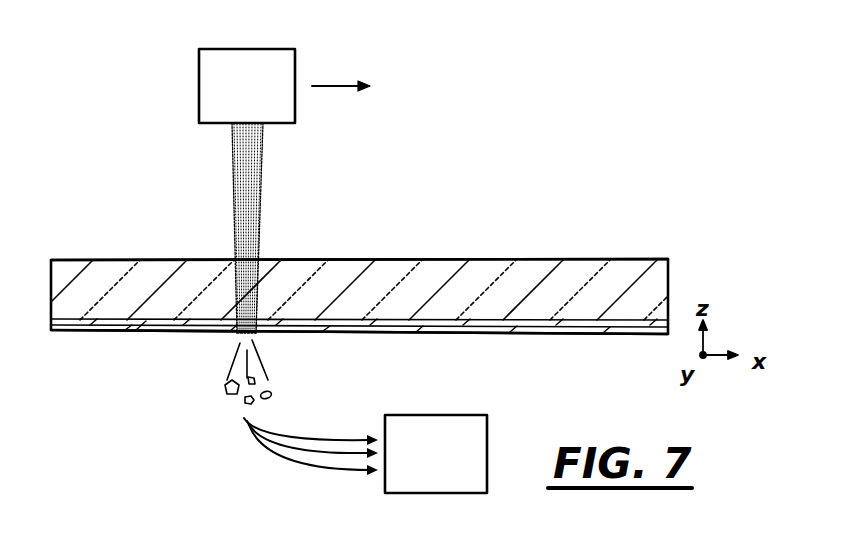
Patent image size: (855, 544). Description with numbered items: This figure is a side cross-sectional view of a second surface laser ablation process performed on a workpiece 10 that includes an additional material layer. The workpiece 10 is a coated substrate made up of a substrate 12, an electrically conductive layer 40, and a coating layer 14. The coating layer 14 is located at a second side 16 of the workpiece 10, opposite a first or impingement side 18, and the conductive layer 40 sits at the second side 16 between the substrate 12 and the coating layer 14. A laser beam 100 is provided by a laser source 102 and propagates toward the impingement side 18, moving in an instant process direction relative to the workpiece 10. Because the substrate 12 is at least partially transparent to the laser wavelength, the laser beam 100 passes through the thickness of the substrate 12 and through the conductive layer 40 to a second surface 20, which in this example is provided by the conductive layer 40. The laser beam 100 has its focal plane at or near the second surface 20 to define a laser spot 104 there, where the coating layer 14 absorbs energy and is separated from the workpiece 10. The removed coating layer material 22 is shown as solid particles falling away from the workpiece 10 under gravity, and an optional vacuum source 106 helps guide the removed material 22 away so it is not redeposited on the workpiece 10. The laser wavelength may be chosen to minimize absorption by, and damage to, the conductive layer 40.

The workpiece 10 is at (80, 246).
The substrate 12 is at (519, 268).
The coating layer 14 is at (532, 335).
The second side 16 is at (600, 335).
The first or impingement side 18 is at (623, 259).
The second surface 20 is at (96, 330).
The removed coating layer material 22 is at (226, 389).
The electrically conductive layer 40 is at (148, 330).
The laser beam 100 is at (259, 217).
The laser source 102 is at (184, 77).
The laser spot 104 is at (250, 335).
The vacuum source 106 is at (462, 470).